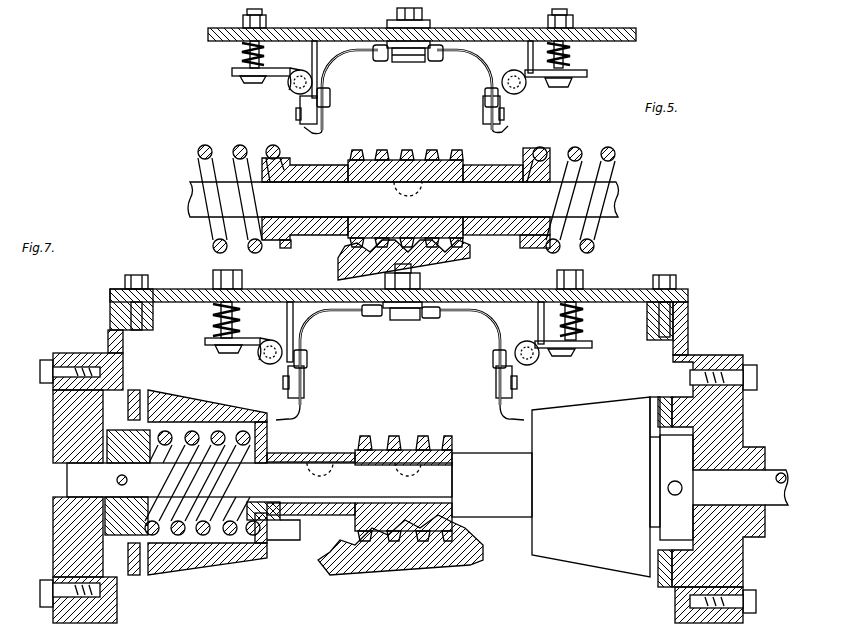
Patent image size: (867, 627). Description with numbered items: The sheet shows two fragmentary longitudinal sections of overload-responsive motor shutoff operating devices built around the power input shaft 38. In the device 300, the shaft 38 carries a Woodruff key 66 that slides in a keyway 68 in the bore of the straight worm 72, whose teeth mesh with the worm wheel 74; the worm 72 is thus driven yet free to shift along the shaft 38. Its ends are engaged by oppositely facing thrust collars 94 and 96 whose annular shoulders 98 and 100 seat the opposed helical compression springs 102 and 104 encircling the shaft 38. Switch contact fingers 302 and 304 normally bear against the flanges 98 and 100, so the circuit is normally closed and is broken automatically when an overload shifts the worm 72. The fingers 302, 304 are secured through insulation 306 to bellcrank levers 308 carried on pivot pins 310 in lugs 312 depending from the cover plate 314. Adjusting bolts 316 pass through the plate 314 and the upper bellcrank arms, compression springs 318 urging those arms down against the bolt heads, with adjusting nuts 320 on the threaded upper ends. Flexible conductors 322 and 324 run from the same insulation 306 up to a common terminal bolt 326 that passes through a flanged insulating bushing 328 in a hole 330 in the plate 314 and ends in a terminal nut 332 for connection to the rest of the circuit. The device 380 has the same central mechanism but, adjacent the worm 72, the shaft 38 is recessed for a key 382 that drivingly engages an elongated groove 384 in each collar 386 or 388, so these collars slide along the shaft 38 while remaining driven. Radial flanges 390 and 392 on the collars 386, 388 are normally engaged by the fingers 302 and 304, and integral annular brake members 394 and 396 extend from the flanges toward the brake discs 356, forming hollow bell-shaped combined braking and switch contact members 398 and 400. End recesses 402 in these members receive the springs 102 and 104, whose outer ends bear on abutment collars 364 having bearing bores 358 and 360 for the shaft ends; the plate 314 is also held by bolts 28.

In FIG. 7, the bolt 28 is at (125, 283).
In FIG. 5, the power input shaft 38 is at (622, 206).
In FIG. 7, the power input shaft 38 is at (330, 505).
In FIG. 5, the Woodruff key 66 is at (412, 196).
In FIG. 7, the Woodruff key 66 is at (390, 472).
In FIG. 5, the keyway 68 is at (375, 190).
In FIG. 5, the worm 72 is at (407, 149).
In FIG. 7, the worm 72 is at (430, 435).
In FIG. 5, the worm wheel 74 is at (462, 270).
In FIG. 7, the worm wheel 74 is at (432, 565).
In FIG. 5, the thrust collar 94 is at (480, 165).
In FIG. 5, the thrust collar 96 is at (314, 165).
In FIG. 5, the annular shoulder 98 is at (530, 147).
In FIG. 5, the annular shoulder 100 is at (270, 146).
In FIG. 5, the helical compression spring 102 is at (582, 150).
In FIG. 5, the helical compression spring 104 is at (204, 145).
In FIG. 7, the helical compression spring 104 is at (216, 431).
In FIG. 5, the overload-responsive motor shutoff operating device 300 is at (482, 26).
In FIG. 5, the switch contact finger 302 is at (487, 124).
In FIG. 7, the switch contact finger 302 is at (503, 420).
In FIG. 5, the switch contact finger 304 is at (326, 130).
In FIG. 7, the switch contact finger 304 is at (304, 402).
In FIG. 5, the insulation 306 is at (305, 120).
In FIG. 7, the insulation 306 is at (287, 394).
In FIG. 5, the bellcrank lever 308 is at (285, 78).
In FIG. 7, the bellcrank lever 308 is at (250, 355).
In FIG. 5, the pivot pin 310 is at (300, 70).
In FIG. 7, the pivot pin 310 is at (547, 375).
In FIG. 5, the lug 312 is at (330, 28).
In FIG. 7, the lug 312 is at (297, 302).
In FIG. 5, the cover plate 314 is at (636, 40).
In FIG. 7, the cover plate 314 is at (690, 300).
In FIG. 5, the adjusting bolt 316 is at (243, 14).
In FIG. 7, the adjusting bolt 316 is at (220, 271).
In FIG. 5, the compression spring 318 is at (243, 53).
In FIG. 7, the compression spring 318 is at (212, 319).
In FIG. 5, the adjusting nut 320 is at (575, 20).
In FIG. 7, the adjusting nut 320 is at (583, 284).
In FIG. 5, the flexible conductor 322 is at (468, 62).
In FIG. 7, the flexible conductor 322 is at (477, 328).
In FIG. 5, the flexible conductor 324 is at (347, 62).
In FIG. 7, the flexible conductor 324 is at (322, 320).
In FIG. 5, the terminal bolt 326 is at (408, 62).
In FIG. 7, the terminal bolt 326 is at (405, 322).
In FIG. 5, the flanged insulating bushing 328 is at (422, 20).
In FIG. 7, the flanged insulating bushing 328 is at (440, 288).
In FIG. 5, the hole 330 is at (440, 28).
In FIG. 7, the hole 330 is at (420, 300).
In FIG. 5, the terminal nut 332 is at (393, 15).
In FIG. 7, the terminal nut 332 is at (385, 282).
In FIG. 7, the brake disc 356 is at (148, 582).
In FIG. 7, the bearing bore 358 is at (770, 447).
In FIG. 7, the bearing bore 360 is at (67, 467).
In FIG. 7, the abutment collar 364 is at (60, 448).
In FIG. 7, the overload-responsive motor shutoff operating device 380 is at (634, 289).
In FIG. 7, the key 382 is at (290, 470).
In FIG. 7, the elongated groove 384 is at (320, 455).
In FIG. 7, the collar 386 is at (500, 518).
In FIG. 7, the collar 388 is at (292, 512).
In FIG. 7, the radial flange 390 is at (532, 545).
In FIG. 7, the radial flange 392 is at (270, 545).
In FIG. 7, the brake member 394 is at (612, 408).
In FIG. 7, the brake member 396 is at (170, 400).
In FIG. 7, the combined braking and switch contact member 398 is at (540, 568).
In FIG. 7, the combined braking and switch contact member 400 is at (258, 565).
In FIG. 7, the end recess 402 is at (215, 565).